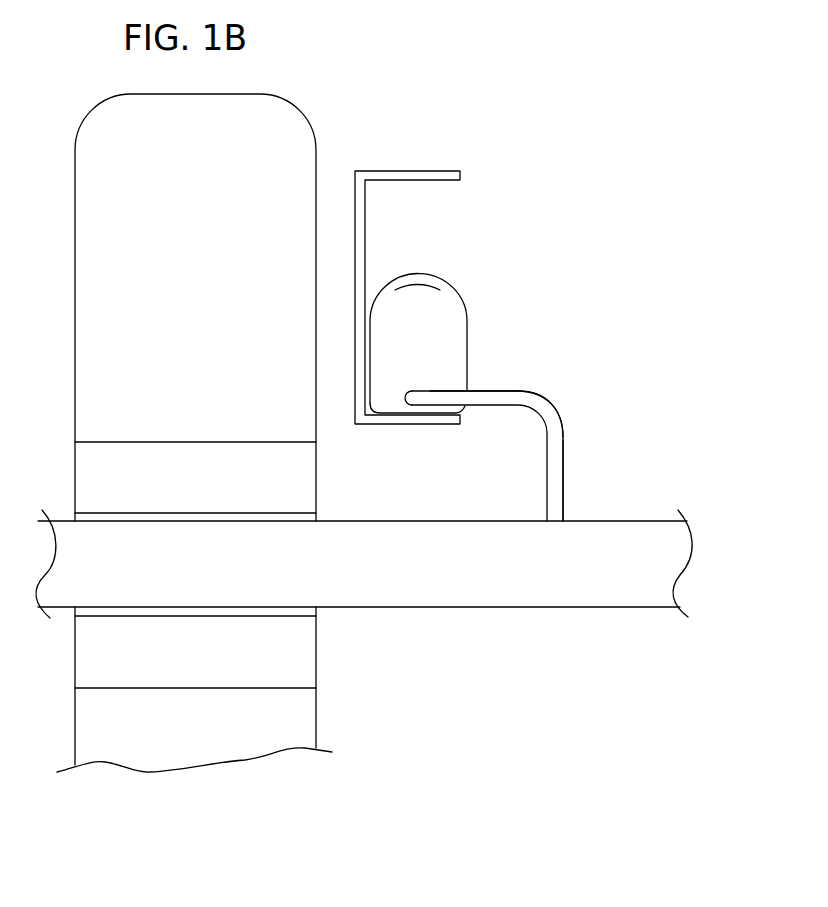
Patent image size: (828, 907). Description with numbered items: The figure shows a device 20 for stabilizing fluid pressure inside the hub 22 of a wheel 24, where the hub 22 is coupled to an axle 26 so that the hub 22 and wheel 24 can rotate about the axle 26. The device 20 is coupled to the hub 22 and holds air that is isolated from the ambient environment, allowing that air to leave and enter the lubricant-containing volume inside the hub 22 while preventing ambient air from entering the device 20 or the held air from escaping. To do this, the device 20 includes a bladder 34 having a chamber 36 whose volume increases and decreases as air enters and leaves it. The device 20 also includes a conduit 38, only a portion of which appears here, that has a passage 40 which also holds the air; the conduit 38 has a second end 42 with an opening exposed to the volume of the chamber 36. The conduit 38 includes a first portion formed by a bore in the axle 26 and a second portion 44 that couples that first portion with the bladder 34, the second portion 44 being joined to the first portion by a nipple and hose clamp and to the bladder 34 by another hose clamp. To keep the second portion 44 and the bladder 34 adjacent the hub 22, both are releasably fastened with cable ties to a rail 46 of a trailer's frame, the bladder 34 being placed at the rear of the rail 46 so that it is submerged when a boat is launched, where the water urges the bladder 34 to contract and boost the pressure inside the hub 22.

The device 20 is at (508, 415).
The hub 22 is at (317, 513).
The wheel 24 is at (287, 102).
The axle 26 is at (623, 607).
The bladder 34 is at (455, 292).
The chamber 36 is at (417, 295).
The conduit 38 is at (563, 453).
The passage 40 is at (538, 415).
The second end 42 is at (412, 390).
The second portion 44 is at (490, 392).
The rail 46 is at (412, 171).